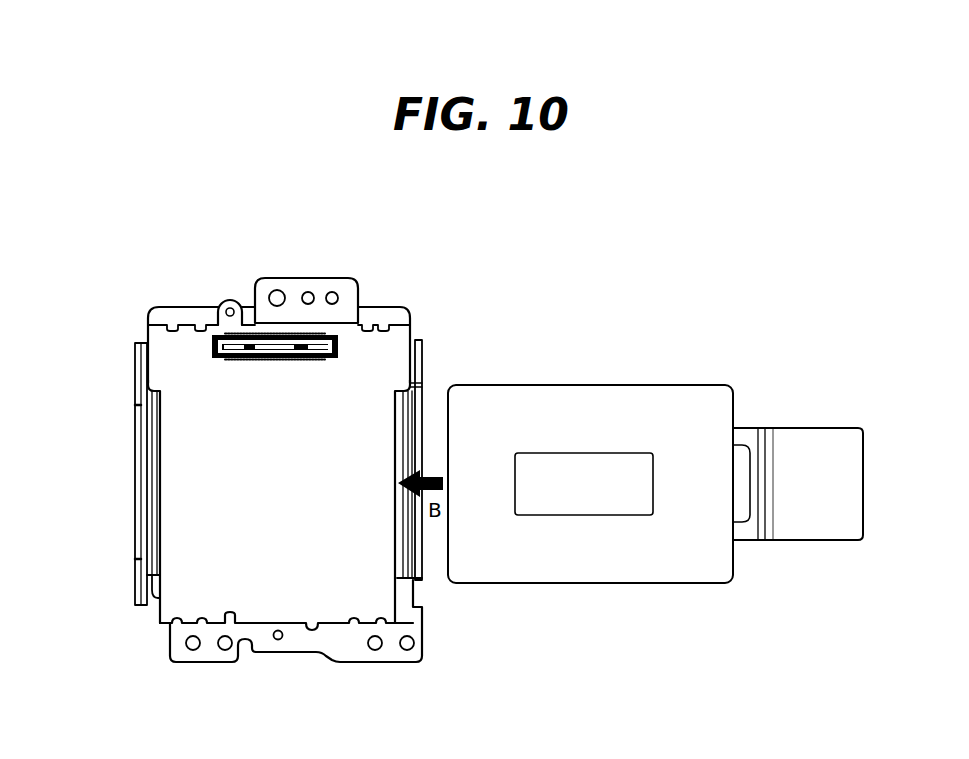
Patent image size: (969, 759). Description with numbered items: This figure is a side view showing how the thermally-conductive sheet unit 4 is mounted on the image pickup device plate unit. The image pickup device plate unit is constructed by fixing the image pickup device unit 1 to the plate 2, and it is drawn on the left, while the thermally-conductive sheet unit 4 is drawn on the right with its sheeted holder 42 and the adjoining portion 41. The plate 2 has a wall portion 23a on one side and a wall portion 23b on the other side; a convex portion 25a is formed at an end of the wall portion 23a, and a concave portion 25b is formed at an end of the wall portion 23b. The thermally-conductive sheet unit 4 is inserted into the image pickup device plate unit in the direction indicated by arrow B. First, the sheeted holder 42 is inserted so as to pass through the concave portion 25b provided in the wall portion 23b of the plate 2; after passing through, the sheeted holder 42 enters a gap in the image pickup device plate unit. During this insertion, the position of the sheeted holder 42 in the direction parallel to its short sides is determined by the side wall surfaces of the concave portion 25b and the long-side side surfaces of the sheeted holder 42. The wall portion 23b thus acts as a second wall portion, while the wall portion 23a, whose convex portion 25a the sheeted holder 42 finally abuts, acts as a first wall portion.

The image pickup device unit 1 is at (393, 335).
The plate 2 is at (181, 306).
The thermally-conductive sheet unit 4 is at (630, 364).
The wall portion 23a is at (139, 372).
The wall portion 23b is at (420, 358).
The convex portion 25a is at (139, 520).
The concave portion 25b is at (420, 422).
The connecting portion of external unit 41 is at (775, 416).
The sheeted holder 42 is at (530, 556).